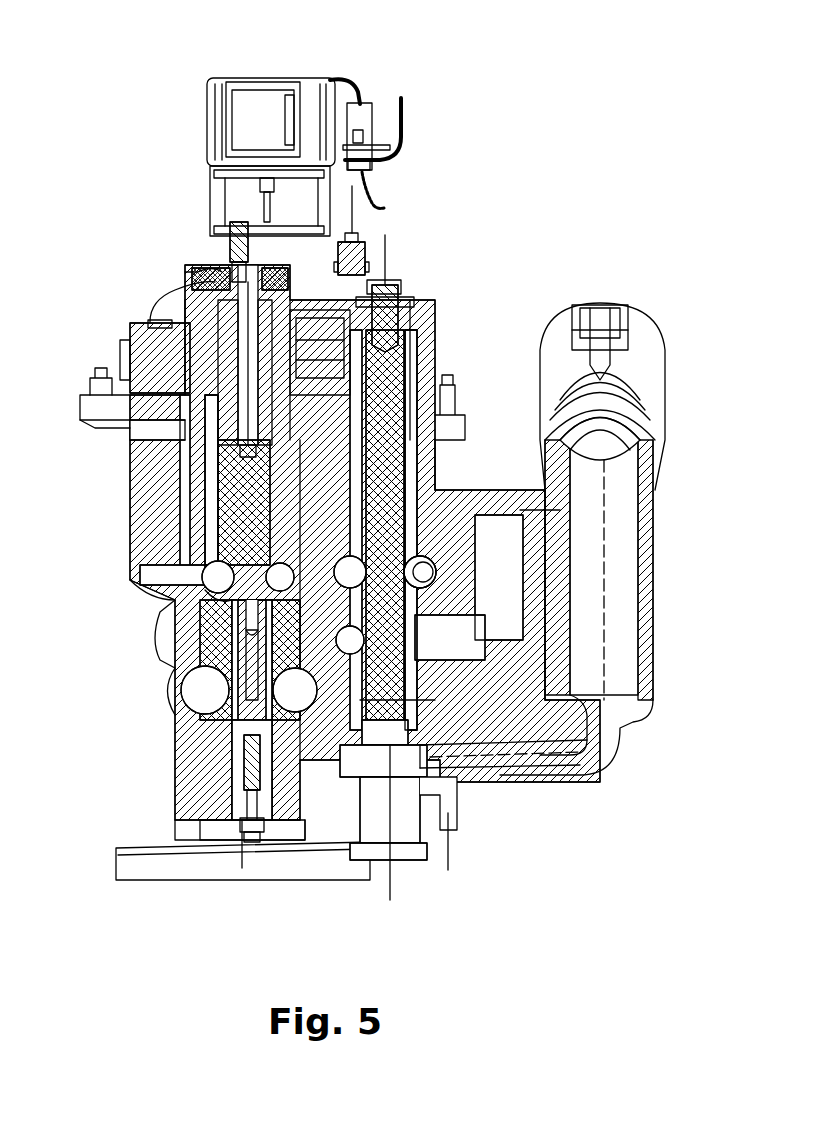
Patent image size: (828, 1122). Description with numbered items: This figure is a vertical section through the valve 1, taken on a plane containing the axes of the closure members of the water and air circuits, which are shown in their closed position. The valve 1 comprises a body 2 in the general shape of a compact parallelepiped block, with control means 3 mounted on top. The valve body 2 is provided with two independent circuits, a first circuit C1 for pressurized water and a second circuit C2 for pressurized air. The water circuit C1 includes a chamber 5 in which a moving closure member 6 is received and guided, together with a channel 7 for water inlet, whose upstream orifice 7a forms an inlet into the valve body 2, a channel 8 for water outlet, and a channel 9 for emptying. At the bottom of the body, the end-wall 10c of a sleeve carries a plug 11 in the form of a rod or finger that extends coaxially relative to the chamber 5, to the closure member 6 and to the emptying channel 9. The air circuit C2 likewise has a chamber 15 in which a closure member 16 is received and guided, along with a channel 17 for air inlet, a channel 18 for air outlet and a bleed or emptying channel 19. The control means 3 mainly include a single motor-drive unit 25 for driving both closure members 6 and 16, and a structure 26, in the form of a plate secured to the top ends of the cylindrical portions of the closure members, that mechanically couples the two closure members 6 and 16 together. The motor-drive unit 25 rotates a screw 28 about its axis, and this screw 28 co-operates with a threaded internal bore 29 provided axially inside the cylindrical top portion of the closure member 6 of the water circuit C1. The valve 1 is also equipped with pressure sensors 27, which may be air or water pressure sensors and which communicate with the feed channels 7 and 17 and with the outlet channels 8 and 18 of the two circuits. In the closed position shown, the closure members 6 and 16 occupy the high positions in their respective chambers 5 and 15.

The valve 1 is at (127, 201).
The valve body 2 is at (128, 512).
The control means 3 is at (236, 76).
The chamber 5 is at (203, 532).
The closure member 6 is at (222, 645).
The channel for water inlet or feed 7 is at (190, 700).
The upstream orifice 7a is at (165, 890).
The channel for water outlet 8 is at (185, 615).
The channel for emptying 9 is at (240, 685).
The end-wall 10c is at (258, 825).
The plug 11 is at (240, 768).
The chamber 15 is at (410, 478).
The closure member 16 is at (417, 717).
The channel for air inlet or feed 17 is at (432, 573).
The channel for air outlet 18 is at (668, 501).
The bleed/emptying channel 19 is at (510, 765).
The motor-drive unit 25 is at (262, 128).
The structure for mechanically coupling 26 is at (350, 323).
The pressure sensors 27 is at (140, 322).
The screw 28 is at (243, 327).
The threaded internal bore 29 is at (222, 368).
The first circuit C1 is at (208, 487).
The second circuit C2 is at (410, 528).